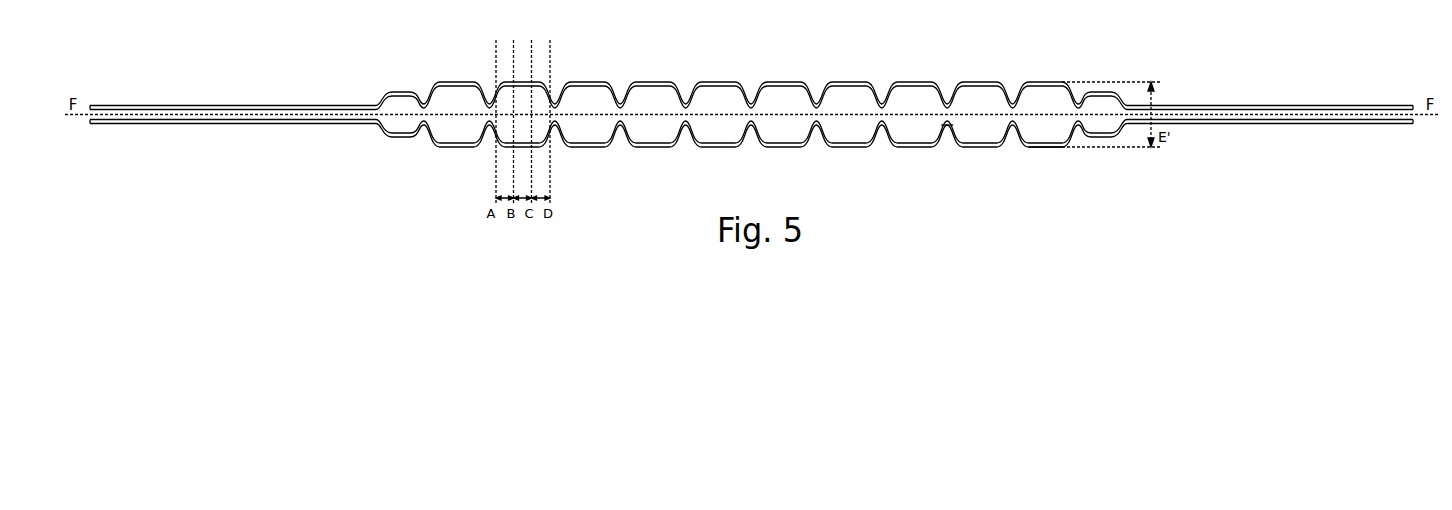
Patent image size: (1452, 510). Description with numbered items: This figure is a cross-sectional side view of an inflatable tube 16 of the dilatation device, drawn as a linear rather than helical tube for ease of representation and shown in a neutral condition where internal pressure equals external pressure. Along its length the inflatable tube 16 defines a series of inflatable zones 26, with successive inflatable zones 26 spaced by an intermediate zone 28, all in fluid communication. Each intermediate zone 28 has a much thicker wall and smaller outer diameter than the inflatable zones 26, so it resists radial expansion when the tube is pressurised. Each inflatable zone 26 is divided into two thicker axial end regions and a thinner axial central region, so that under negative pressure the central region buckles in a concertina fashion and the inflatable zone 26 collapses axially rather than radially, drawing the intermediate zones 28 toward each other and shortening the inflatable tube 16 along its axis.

The inflatable tube 16 is at (1203, 106).
The inflatable zone 26 is at (1042, 138).
The intermediate zone 28 is at (947, 128).